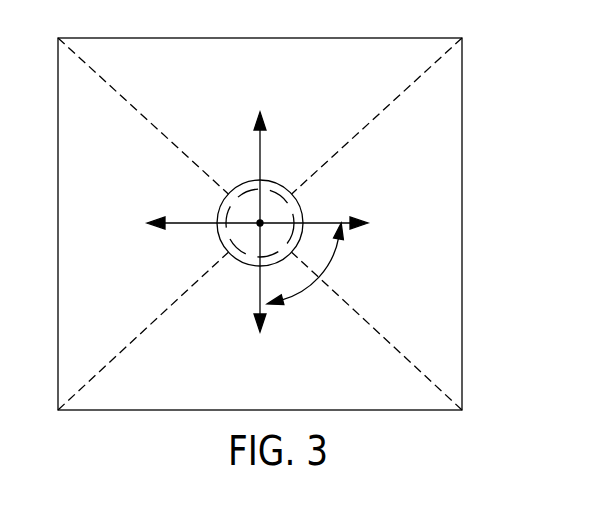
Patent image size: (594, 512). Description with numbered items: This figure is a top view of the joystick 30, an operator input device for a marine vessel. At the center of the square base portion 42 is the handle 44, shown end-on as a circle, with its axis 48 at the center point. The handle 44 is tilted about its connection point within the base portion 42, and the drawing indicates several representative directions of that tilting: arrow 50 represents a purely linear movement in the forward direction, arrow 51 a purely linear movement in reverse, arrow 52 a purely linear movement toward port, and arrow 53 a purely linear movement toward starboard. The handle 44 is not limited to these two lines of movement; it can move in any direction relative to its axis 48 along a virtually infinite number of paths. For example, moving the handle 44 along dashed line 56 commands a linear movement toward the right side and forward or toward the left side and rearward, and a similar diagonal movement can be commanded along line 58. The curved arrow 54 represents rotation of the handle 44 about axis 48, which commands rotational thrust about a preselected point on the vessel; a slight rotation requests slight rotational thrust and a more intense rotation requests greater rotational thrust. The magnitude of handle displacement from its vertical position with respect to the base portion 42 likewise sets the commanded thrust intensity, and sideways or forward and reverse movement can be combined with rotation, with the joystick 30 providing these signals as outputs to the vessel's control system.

The joystick 30 is at (502, 61).
The base portion 42 is at (444, 224).
The handle 44 is at (253, 181).
The axis 48 is at (228, 212).
The arrow 50 is at (262, 152).
The arrow 51 is at (258, 305).
The arrow 52 is at (180, 225).
The arrow 53 is at (342, 222).
The arrow 54 is at (328, 272).
The dashed line 56 is at (388, 107).
The line 58 is at (144, 116).